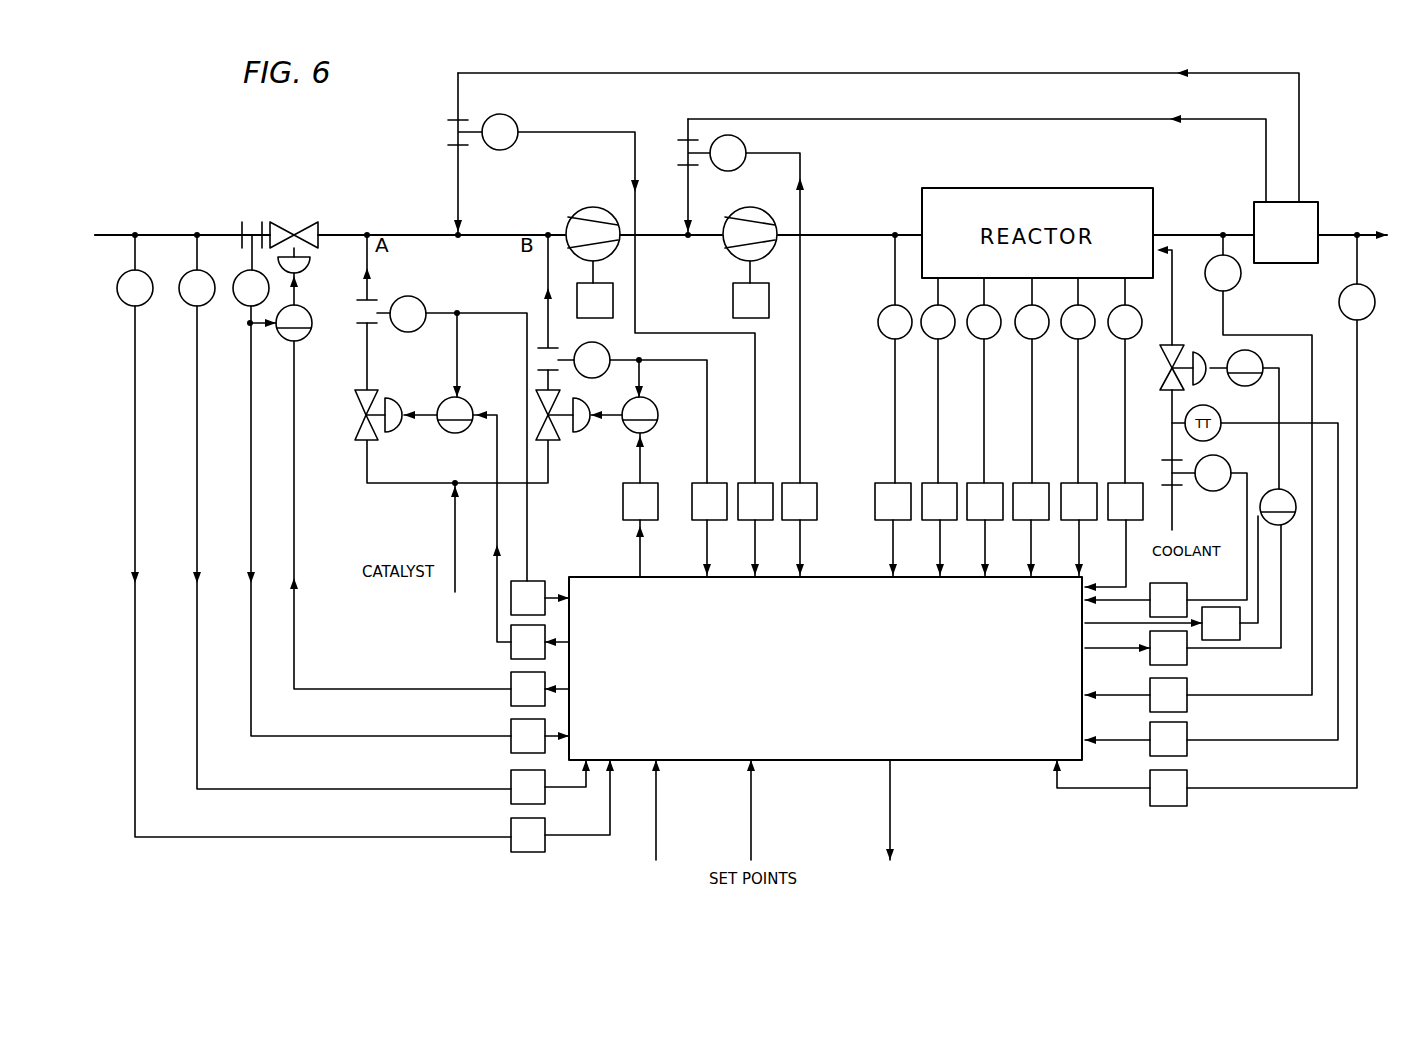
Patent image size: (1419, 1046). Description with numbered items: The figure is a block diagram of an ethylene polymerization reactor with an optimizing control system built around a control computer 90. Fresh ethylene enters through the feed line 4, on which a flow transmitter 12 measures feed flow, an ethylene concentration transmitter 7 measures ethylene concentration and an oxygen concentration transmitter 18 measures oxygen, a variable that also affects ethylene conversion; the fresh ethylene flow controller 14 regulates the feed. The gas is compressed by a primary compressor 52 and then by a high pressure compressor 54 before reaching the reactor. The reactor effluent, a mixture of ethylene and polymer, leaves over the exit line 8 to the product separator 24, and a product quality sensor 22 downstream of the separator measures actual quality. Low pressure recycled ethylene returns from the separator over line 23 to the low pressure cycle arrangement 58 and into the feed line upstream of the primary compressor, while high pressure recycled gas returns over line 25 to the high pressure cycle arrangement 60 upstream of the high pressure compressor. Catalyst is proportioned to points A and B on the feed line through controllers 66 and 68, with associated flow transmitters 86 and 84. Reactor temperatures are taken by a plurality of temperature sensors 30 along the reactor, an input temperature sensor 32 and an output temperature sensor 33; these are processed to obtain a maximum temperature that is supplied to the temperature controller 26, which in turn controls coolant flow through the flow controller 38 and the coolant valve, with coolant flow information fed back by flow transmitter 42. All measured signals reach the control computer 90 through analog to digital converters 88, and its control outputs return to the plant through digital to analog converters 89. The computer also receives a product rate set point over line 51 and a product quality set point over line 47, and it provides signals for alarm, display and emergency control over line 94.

The feed line 4 is at (175, 233).
The ethylene concentration transmitter 7 is at (131, 305).
The oxygen concentration transmitter 18 is at (193, 305).
The flow transmitter 12 is at (238, 274).
The fresh ethylene flow controller 14 is at (306, 336).
The flow transmitter 86 is at (408, 297).
The controller 66 is at (467, 401).
The flow transmitter 84 is at (598, 350).
The controller 68 is at (650, 400).
The low pressure cycle arrangement 58 is at (543, 128).
The high pressure cycle arrangement 60 is at (805, 136).
The primary compressor 52 is at (585, 212).
The high pressure compressor 54 is at (745, 212).
The line 23 is at (1048, 73).
The line 25 is at (1107, 119).
The exit line 8 is at (1212, 203).
The input temperature sensor 32 is at (878, 322).
The temperature sensors 30 is at (1027, 342).
The output temperature sensor 33 is at (1229, 289).
The product separator 24 is at (1308, 212).
The product quality sensor 22 is at (1340, 304).
The flow controller 38 is at (1260, 362).
The flow transmitter 42 is at (1205, 460).
The temperature controller 26 is at (1275, 495).
The control computer 90 is at (1050, 749).
The analog to digital converters 88 is at (530, 580).
The digital to analog converters 89 is at (623, 500).
The line 51 is at (656, 840).
The line 47 is at (751, 797).
The line 94 is at (890, 799).